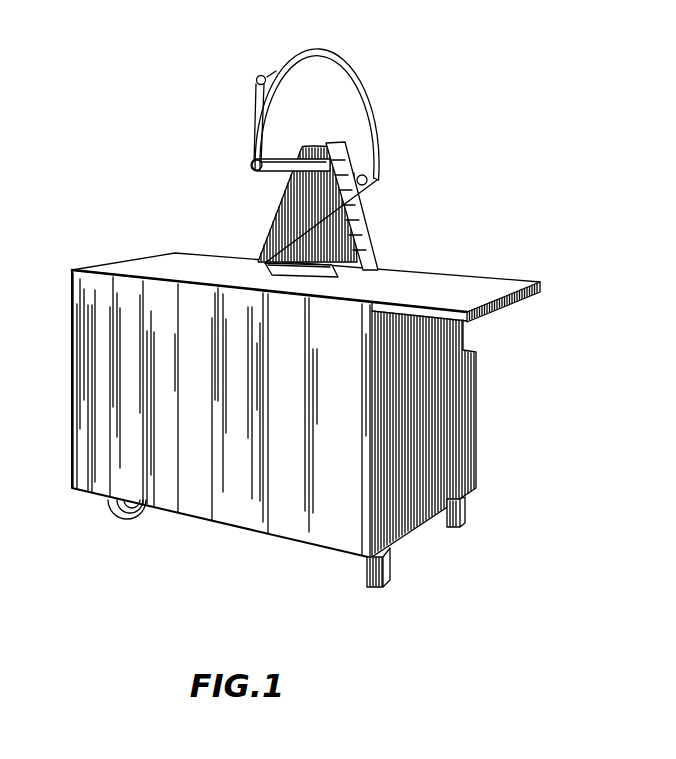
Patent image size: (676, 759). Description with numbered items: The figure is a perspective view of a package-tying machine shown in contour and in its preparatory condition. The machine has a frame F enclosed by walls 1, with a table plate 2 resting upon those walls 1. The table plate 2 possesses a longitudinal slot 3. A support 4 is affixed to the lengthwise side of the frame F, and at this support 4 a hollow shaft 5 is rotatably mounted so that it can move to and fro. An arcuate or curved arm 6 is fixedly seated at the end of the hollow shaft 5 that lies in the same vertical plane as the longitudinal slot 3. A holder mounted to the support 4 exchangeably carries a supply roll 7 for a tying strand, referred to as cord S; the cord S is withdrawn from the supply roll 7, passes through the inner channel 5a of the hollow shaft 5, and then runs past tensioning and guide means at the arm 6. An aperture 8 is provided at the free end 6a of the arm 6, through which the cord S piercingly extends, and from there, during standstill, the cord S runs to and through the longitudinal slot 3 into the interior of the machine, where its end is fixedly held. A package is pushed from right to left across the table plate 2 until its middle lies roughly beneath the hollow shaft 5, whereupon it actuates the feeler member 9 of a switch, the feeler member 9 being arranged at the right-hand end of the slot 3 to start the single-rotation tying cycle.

The walls 1 is at (98, 346).
The table plate 2 is at (462, 283).
The longitudinal slot 3 is at (330, 276).
The support 4 is at (292, 189).
The hollow shaft 5 is at (287, 157).
The inner channel 5a is at (255, 164).
The arcuate arm 6 is at (363, 108).
The free end 6a is at (373, 164).
The supply roll 7 is at (350, 168).
The aperture 8 is at (378, 177).
The feeler member 9 is at (338, 269).
The cord S is at (290, 260).
The frame F is at (403, 502).